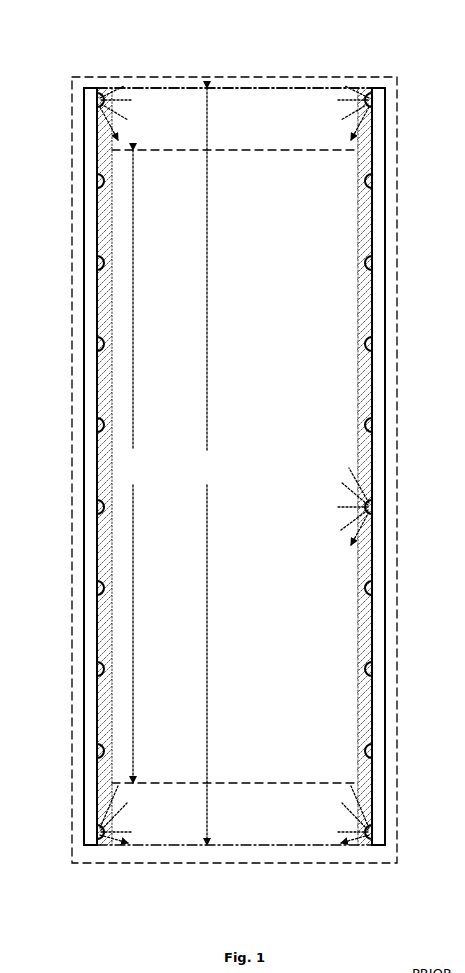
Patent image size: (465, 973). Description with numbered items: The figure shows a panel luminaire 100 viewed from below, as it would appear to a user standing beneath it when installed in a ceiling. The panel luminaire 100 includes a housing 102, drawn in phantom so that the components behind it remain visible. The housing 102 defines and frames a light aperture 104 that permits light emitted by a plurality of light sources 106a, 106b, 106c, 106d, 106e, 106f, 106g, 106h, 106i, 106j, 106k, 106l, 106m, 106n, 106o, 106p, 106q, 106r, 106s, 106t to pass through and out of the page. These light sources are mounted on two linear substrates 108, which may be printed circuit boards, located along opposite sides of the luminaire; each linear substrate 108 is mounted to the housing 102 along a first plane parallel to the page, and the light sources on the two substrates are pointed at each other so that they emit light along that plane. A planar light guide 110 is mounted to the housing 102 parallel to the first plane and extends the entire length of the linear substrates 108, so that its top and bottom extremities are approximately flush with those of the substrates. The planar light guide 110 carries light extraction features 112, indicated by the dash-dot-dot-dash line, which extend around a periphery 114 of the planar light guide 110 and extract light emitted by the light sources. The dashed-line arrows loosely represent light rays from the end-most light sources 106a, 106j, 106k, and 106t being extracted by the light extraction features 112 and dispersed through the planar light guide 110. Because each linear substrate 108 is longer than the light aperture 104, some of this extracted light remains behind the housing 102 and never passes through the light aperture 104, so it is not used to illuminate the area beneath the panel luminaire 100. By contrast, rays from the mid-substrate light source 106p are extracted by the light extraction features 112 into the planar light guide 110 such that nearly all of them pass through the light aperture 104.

The panel luminaire 100 is at (410, 98).
The housing 102 is at (183, 77).
The light aperture 104 is at (134, 466).
The light source 106a is at (100, 92).
The light source 106b is at (86, 170).
The light source 106c is at (86, 252).
The light source 106d is at (86, 333).
The light source 106e is at (86, 414).
The light source 106f is at (86, 496).
The light source 106g is at (86, 577).
The light source 106h is at (86, 658).
The light source 106i is at (86, 740).
The light source 106j is at (86, 822).
The light source 106k is at (369, 92).
The light source 106l is at (378, 172).
The light source 106m is at (378, 254).
The light source 106n is at (378, 335).
The light source 106o is at (378, 416).
The light source 106p is at (378, 498).
The light source 106q is at (378, 579).
The light source 106r is at (378, 660).
The light source 106s is at (378, 742).
The light source 106t is at (378, 824).
The linear substrate 108 is at (97, 375).
The planar light guide 110 is at (208, 466).
The light extraction features 112 is at (233, 87).
The periphery 114 is at (285, 88).